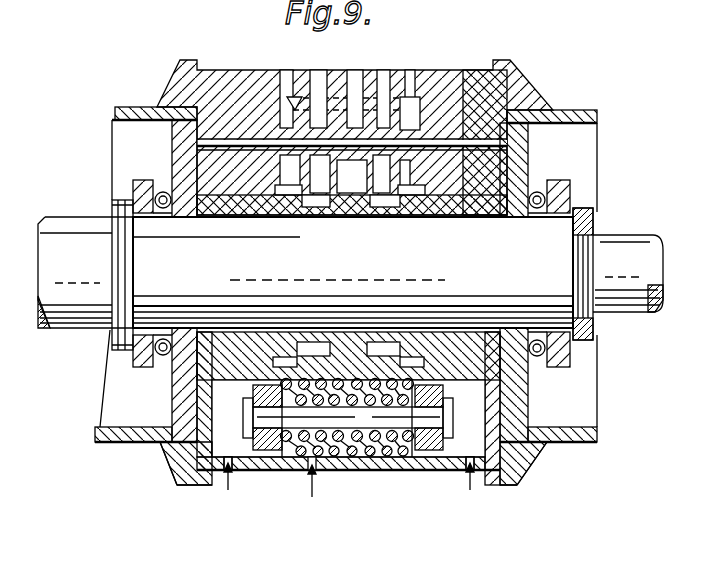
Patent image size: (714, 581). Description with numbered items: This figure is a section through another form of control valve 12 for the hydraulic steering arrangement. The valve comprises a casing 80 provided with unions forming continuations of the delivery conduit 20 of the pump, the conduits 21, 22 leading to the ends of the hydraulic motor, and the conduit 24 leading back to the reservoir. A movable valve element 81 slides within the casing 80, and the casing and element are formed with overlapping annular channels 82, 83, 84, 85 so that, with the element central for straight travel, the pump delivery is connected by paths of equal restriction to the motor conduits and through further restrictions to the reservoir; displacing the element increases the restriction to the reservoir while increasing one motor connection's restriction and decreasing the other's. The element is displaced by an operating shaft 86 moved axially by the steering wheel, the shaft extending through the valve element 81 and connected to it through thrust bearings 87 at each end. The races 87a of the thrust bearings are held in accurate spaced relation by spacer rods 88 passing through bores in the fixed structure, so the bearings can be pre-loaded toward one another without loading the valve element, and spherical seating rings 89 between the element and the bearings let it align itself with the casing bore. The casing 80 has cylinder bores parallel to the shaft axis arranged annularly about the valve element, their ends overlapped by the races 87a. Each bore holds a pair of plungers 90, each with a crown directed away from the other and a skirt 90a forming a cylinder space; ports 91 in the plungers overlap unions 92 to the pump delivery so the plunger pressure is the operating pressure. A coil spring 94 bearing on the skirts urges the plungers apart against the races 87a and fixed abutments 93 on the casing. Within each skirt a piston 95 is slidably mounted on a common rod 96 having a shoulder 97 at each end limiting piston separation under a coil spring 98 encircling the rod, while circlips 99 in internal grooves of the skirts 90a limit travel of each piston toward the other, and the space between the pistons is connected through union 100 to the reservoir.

The valve casing 12 is at (346, 213).
The casing 80 is at (227, 93).
The movable valve element 81 is at (460, 100).
The conduit 24 is at (288, 82).
The conduit 21 is at (316, 82).
The delivery conduit 20 is at (357, 78).
The conduit 22 is at (397, 78).
The spacer rod 88 is at (197, 111).
The race 87a is at (175, 143).
The thrust bearing 87 is at (160, 196).
The seating ring 89 is at (540, 192).
The shaft 86 is at (610, 238).
The annular channel 85 is at (287, 192).
The annular channel 83 is at (317, 203).
The annular channel 82 is at (350, 180).
The annular channel 84 is at (393, 198).
The shoulder 97 is at (243, 410).
The coil spring 94 is at (358, 428).
The common rod 96 is at (340, 442).
The coil spring 98 is at (387, 443).
The circlip 99 is at (285, 380).
The union 100 is at (321, 509).
The skirt 90a is at (262, 470).
The plunger 90 is at (187, 437).
The fixed abutment 93 is at (190, 448).
The port 91 is at (200, 457).
The union 92 is at (220, 467).
The piston 95 is at (229, 490).